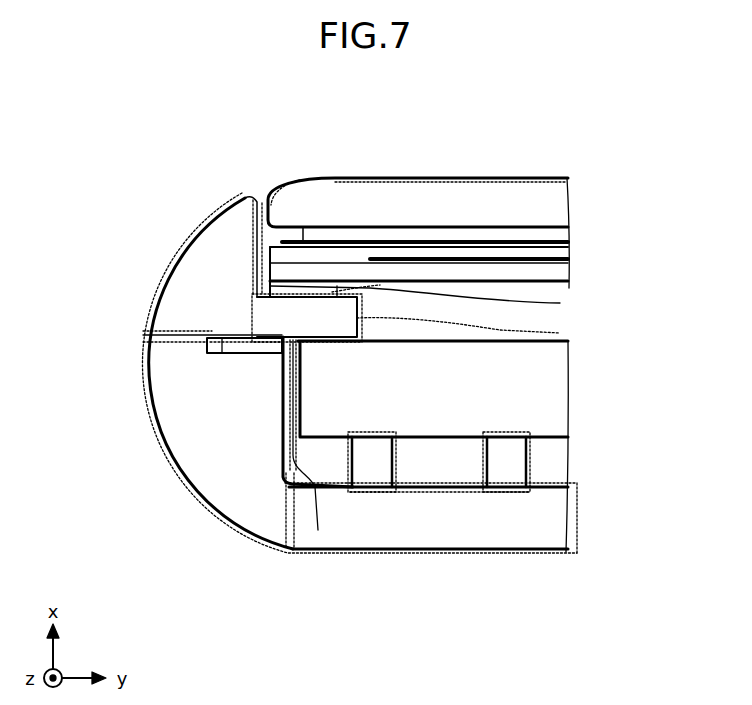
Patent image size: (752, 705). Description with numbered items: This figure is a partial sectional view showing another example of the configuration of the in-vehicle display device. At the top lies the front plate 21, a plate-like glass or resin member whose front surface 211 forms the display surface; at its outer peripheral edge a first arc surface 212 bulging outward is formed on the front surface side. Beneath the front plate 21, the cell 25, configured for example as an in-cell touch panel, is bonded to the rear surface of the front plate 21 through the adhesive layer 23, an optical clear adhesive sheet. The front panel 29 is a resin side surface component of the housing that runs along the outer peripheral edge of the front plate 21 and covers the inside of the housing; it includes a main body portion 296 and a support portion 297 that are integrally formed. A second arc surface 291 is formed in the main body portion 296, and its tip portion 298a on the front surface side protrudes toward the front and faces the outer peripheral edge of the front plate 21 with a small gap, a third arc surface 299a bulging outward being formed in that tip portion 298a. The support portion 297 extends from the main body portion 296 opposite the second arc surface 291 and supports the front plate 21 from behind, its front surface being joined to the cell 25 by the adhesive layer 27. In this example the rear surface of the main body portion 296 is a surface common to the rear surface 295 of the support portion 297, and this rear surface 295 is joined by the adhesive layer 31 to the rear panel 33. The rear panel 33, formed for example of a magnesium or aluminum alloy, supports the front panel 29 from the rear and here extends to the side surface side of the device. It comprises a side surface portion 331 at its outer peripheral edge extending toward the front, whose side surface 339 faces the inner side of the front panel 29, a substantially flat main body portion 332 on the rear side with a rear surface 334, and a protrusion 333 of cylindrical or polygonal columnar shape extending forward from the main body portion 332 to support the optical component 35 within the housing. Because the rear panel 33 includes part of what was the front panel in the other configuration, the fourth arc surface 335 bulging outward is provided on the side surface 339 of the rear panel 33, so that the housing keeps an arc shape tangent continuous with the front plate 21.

The front plate 21 is at (515, 207).
The front surface 211 is at (455, 178).
The first arc surface 212 is at (282, 185).
The adhesive layer 23 is at (550, 232).
The cell 25 is at (552, 253).
The adhesive layer 27 is at (560, 303).
The front panel 29 is at (190, 281).
The second arc surface 291 is at (192, 240).
The rear surface 295 is at (197, 327).
The main body portion 296 is at (214, 211).
The support portion 297 is at (560, 333).
The tip portion on the front surface side 298a is at (247, 207).
The third arc surface 299a is at (255, 200).
The adhesive layer 31 is at (247, 347).
The rear panel 33 is at (537, 518).
The side surface portion 331 is at (154, 432).
The main body portion 332 is at (403, 553).
The protrusion 333 is at (375, 432).
The rear surface 334 is at (502, 552).
The fourth arc surface 335 is at (147, 386).
The side surface 339 is at (171, 457).
The optical component 35 is at (535, 412).